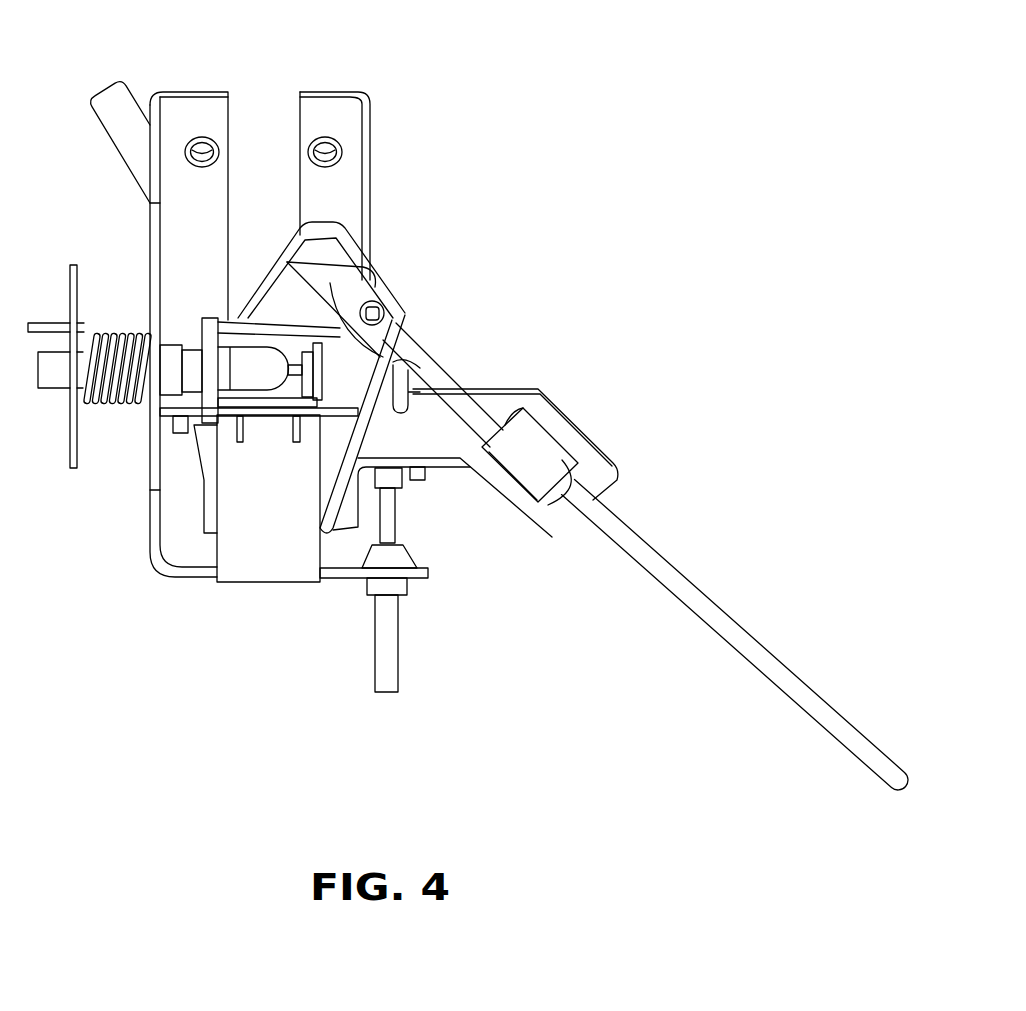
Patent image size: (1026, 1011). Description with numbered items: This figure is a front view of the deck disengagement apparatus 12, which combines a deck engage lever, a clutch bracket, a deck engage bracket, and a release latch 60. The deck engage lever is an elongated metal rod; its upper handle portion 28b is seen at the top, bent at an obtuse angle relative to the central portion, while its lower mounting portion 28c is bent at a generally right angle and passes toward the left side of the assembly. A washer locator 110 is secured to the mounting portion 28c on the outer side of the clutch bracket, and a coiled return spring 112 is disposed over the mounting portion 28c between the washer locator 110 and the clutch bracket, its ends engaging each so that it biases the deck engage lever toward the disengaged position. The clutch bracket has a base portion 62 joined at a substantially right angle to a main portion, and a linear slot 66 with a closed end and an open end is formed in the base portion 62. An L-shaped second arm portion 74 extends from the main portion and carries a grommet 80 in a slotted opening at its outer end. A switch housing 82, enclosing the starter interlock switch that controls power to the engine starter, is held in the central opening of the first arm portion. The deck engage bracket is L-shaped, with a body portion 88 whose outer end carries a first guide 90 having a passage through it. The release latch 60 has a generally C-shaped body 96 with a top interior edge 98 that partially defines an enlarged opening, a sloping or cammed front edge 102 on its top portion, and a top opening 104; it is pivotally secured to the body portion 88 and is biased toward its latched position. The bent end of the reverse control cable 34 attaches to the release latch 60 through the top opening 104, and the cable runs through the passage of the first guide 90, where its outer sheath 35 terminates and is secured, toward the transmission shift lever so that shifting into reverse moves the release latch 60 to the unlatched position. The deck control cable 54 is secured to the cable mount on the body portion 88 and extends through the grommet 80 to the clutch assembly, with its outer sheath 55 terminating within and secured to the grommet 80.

The deck disengagement apparatus 12 is at (526, 270).
The upper handle portion 28b is at (122, 98).
The lower mounting portion 28c is at (53, 387).
The reverse control cable 34 is at (423, 350).
The outer sheath 35 is at (628, 547).
The deck control cable 54 is at (397, 525).
The outer sheath 55 is at (393, 655).
The release latch 60 is at (396, 259).
The base portion 62 is at (327, 110).
The linear slot 66 is at (262, 120).
The second arm portion 74 is at (418, 573).
The grommet 80 is at (397, 555).
The switch housing 82 is at (237, 563).
The body portion 88 is at (410, 438).
The first guide 90 is at (540, 462).
The C-shaped body 96 is at (298, 302).
The top interior edge 98 is at (287, 358).
The front edge 102 is at (338, 288).
The top opening 104 is at (384, 318).
The washer locator 110 is at (73, 462).
The return spring 112 is at (115, 407).